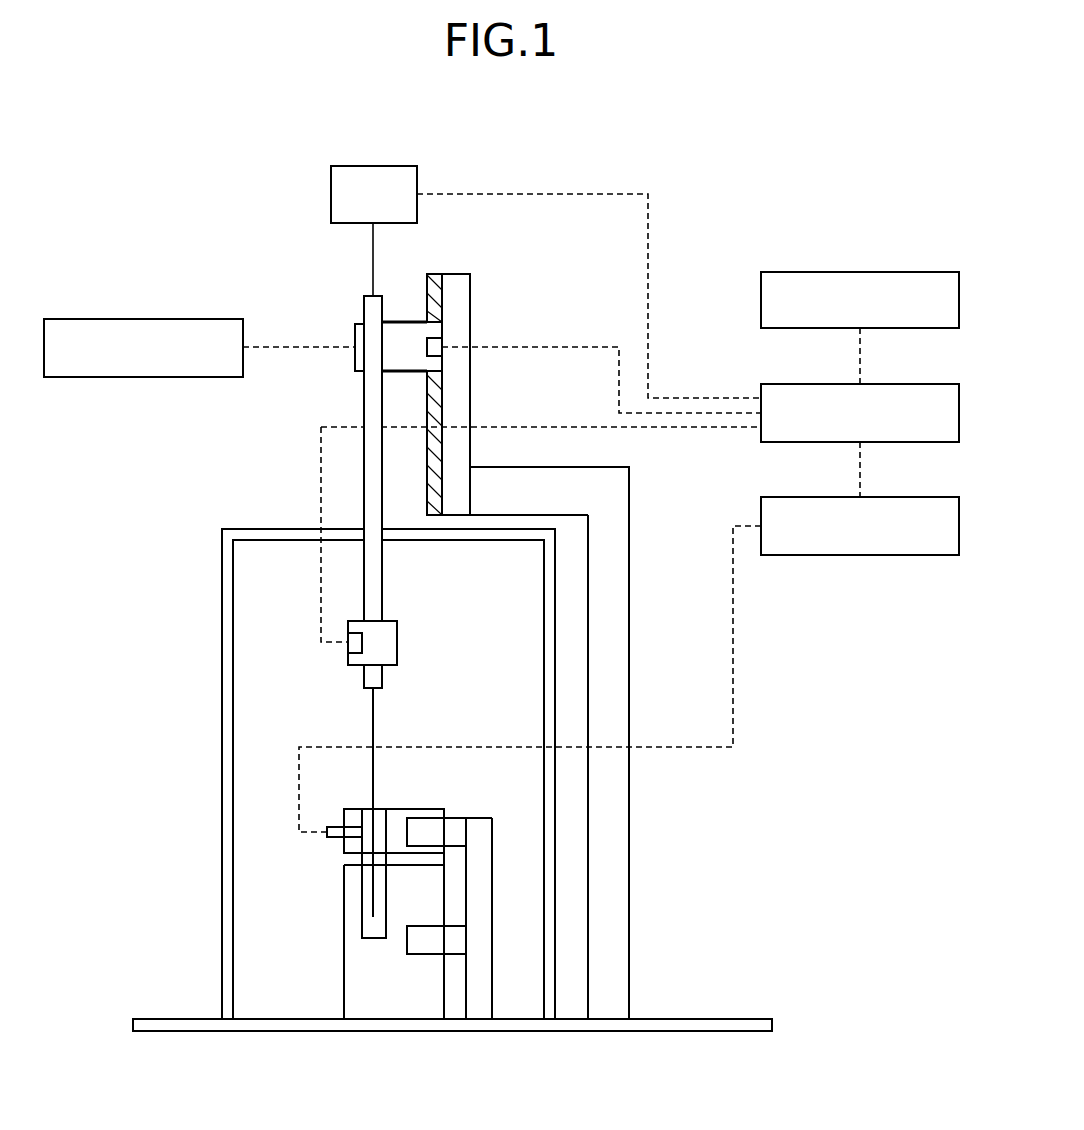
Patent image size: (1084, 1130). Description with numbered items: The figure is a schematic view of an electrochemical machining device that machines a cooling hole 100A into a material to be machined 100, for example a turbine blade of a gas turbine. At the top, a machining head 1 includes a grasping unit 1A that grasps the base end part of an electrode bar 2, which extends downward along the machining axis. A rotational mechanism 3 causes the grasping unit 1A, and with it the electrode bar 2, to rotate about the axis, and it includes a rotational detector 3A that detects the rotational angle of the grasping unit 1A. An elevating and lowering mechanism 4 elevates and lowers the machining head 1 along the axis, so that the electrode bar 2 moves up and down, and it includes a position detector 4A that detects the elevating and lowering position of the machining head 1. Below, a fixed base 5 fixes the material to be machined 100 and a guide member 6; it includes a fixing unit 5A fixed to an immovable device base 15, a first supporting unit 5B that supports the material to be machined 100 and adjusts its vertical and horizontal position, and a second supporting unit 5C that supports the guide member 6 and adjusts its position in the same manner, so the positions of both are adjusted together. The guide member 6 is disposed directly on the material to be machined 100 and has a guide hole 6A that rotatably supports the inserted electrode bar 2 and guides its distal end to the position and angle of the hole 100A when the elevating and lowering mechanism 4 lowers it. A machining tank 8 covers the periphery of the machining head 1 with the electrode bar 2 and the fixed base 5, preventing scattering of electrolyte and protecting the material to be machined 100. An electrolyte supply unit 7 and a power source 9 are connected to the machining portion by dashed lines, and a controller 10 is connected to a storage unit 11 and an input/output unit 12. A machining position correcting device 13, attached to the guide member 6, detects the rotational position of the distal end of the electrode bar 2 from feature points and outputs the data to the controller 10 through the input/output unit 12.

The machining head 1 is at (383, 580).
The grasping unit 1A is at (382, 676).
The electrode bar 2 is at (374, 708).
The rotational mechanism 3 is at (397, 640).
The rotational detector 3A is at (348, 646).
The elevating and lowering mechanism 4 is at (427, 290).
The position detector 4A is at (437, 346).
The fixed base 5 is at (546, 908).
The fixing unit 5A is at (480, 877).
The first supporting unit 5B is at (457, 940).
The second supporting unit 5C is at (453, 823).
The guide member 6 is at (400, 809).
The guide hole 6A is at (364, 816).
The electrolyte supply unit 7 is at (370, 166).
The machining tank 8 is at (255, 529).
The power source 9 is at (192, 319).
The controller 10 is at (905, 384).
The storage unit 11 is at (905, 272).
The input/output unit 12 is at (905, 497).
The machining position correcting device 13 is at (327, 836).
The device base 15 is at (732, 1019).
The material to be machined 100 is at (344, 952).
The hole 100A is at (362, 916).